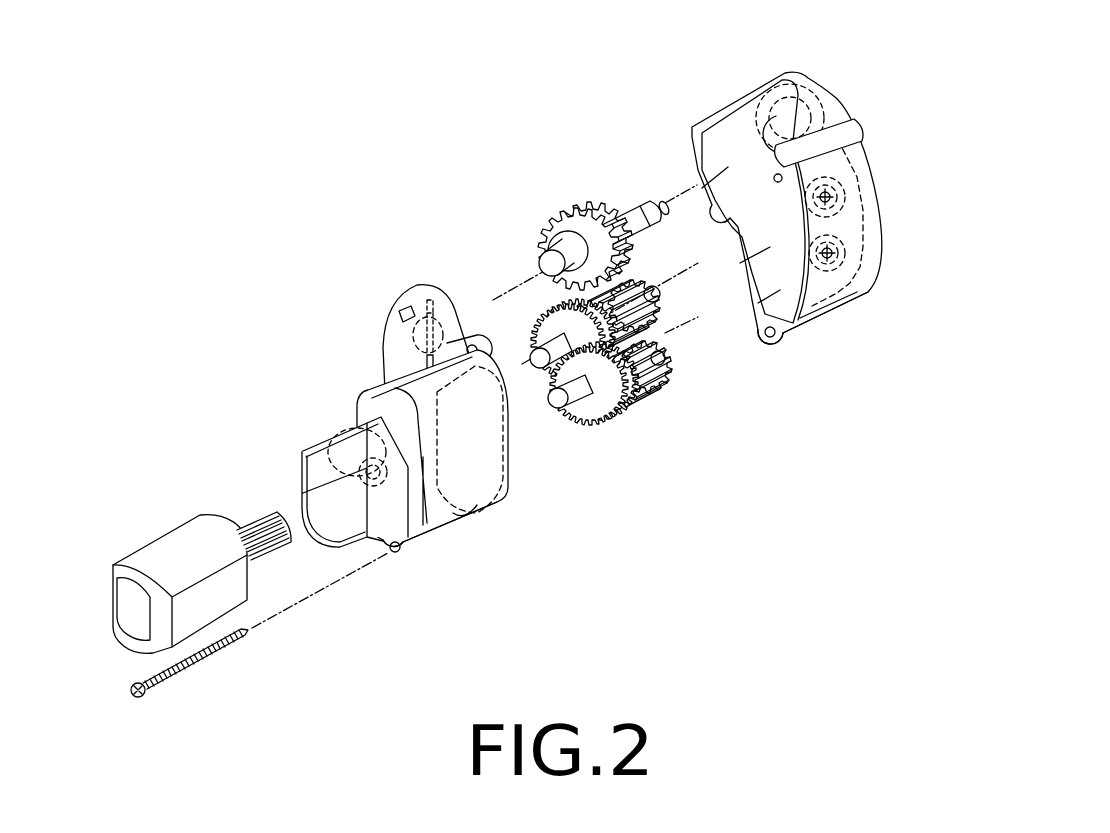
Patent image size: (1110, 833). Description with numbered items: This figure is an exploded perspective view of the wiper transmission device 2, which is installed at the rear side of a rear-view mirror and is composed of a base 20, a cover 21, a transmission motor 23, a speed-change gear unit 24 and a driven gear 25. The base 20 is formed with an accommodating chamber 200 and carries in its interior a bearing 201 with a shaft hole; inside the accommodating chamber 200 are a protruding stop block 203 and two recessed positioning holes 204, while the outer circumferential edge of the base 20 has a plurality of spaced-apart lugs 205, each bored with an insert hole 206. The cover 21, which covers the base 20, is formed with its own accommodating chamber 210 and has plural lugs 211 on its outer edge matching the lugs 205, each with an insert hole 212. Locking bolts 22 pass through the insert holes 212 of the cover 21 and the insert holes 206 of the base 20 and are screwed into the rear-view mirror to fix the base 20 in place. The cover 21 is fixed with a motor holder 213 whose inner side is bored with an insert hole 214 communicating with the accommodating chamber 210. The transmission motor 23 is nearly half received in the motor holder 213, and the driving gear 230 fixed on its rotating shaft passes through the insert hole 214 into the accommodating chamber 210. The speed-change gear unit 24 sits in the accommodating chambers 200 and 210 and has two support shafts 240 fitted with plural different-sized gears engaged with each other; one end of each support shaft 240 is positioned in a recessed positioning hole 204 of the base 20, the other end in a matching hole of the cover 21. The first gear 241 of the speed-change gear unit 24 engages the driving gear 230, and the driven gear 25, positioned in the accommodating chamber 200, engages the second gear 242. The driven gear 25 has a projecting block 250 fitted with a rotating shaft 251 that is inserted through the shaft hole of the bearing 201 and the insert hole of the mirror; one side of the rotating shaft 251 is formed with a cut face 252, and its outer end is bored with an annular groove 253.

The wiper transmission device 2 is at (532, 367).
The base 20 is at (821, 235).
The accommodating chamber 200 is at (785, 293).
The bearing 201 is at (870, 155).
The stop block 203 is at (808, 100).
The recessed positioning holes 204 is at (840, 197).
The lugs 205 is at (823, 317).
The insert hole 206 is at (768, 345).
The cover 21 is at (408, 460).
The accommodating chamber 210 is at (502, 484).
The lugs 211 is at (433, 530).
The insert hole 212 is at (395, 553).
The motor holder 213 is at (328, 450).
The insert hole 214 is at (338, 440).
The locking bolts 22 is at (202, 662).
The transmission motor 23 is at (202, 552).
The driving gear 230 is at (254, 520).
The speed-change gear unit 24 is at (614, 397).
The support shafts 240 is at (540, 366).
The first gear 241 is at (597, 412).
The second gear 242 is at (662, 355).
The driven gear 25 is at (619, 181).
The projecting block 250 is at (622, 251).
The rotating shaft 251 is at (618, 222).
The cut face 252 is at (650, 210).
The annular groove 253 is at (660, 203).